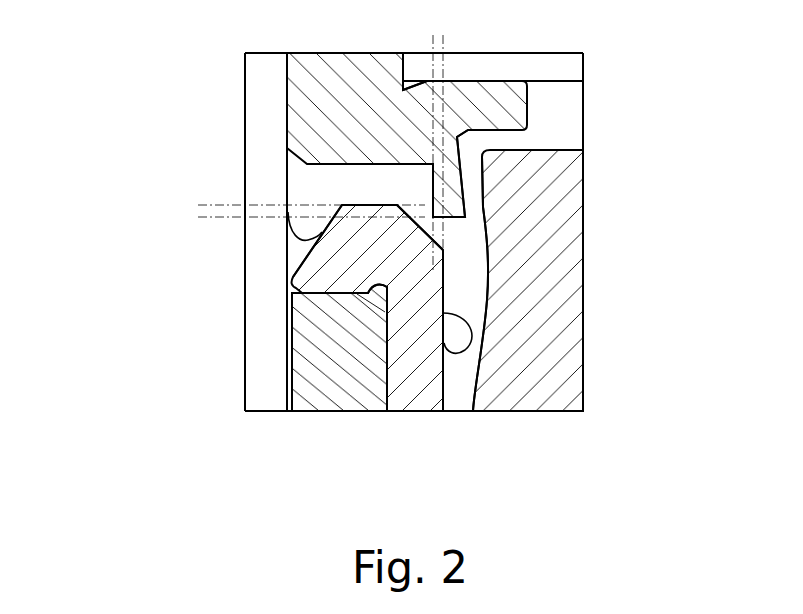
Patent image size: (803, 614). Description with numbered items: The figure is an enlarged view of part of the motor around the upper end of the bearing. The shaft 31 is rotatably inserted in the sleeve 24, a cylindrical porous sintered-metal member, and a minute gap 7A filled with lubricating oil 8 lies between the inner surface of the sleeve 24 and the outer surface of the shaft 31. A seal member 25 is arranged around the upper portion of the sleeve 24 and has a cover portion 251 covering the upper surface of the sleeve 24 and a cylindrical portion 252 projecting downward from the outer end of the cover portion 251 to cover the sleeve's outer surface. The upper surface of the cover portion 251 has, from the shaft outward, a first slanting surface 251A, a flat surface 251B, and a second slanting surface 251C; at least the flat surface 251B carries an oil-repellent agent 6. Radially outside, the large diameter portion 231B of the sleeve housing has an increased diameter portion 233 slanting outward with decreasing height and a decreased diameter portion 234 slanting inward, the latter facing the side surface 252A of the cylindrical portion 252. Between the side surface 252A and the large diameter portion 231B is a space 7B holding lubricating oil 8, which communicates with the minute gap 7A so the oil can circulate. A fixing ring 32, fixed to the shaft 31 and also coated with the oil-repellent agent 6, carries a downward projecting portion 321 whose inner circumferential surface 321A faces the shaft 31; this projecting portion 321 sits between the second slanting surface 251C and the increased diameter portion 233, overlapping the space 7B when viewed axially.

The shaft 31 is at (248, 88).
The fixing ring 32 is at (320, 63).
The projecting portion 321 is at (458, 203).
The inner circumferential surface 321A is at (457, 204).
The oil-repellent agent 6 is at (320, 163).
The lubricating oil 8 is at (290, 266).
The large diameter portion 231B is at (565, 243).
The increased diameter portion 233 is at (430, 236).
The decreased diameter portion 234 is at (488, 287).
The sleeve 24 is at (308, 412).
The seal member 25 is at (428, 455).
The cover portion 251 is at (348, 284).
The first slanting surface 251A is at (303, 262).
The flat surface 251B is at (353, 205).
The second slanting surface 251C is at (485, 230).
The cylindrical portion 252 is at (400, 393).
The side surface 252A is at (462, 350).
The minute gap 7A is at (286, 388).
The space 7B is at (474, 327).